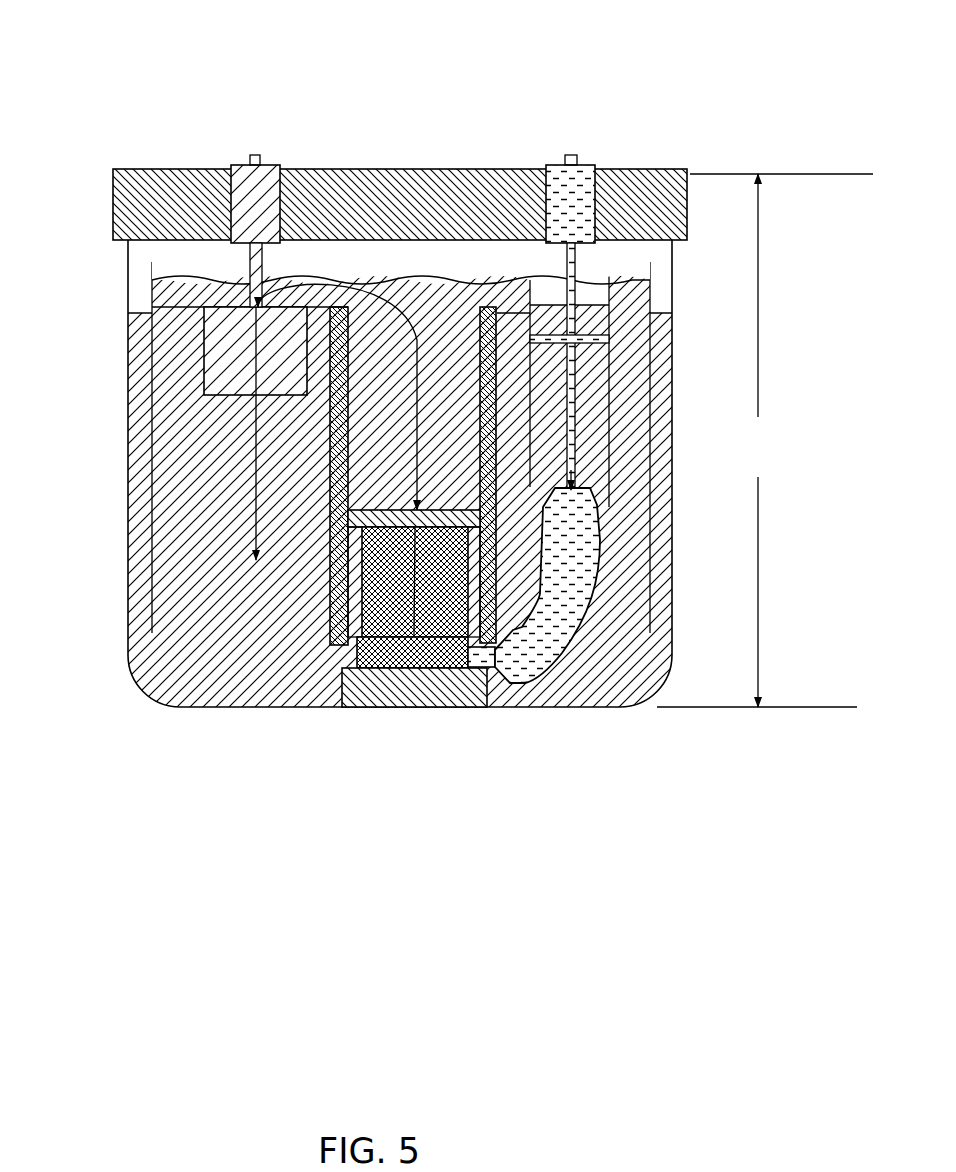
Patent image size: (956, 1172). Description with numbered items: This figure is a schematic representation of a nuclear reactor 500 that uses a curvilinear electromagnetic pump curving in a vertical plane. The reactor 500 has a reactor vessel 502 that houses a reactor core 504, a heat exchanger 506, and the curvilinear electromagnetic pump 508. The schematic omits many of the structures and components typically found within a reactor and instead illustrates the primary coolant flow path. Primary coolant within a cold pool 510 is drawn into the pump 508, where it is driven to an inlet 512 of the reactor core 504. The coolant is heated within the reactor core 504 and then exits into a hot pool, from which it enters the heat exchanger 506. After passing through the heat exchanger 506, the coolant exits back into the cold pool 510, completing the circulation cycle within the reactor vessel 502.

The nuclear reactor 500 is at (200, 70).
The reactor vessel 502 is at (128, 492).
The reactor core 504 is at (307, 687).
The heat exchanger 506 is at (225, 353).
The curvilinear electromagnetic pump 508 is at (595, 551).
The cold pool 510 is at (463, 316).
The inlet of the reactor core 512 is at (403, 670).